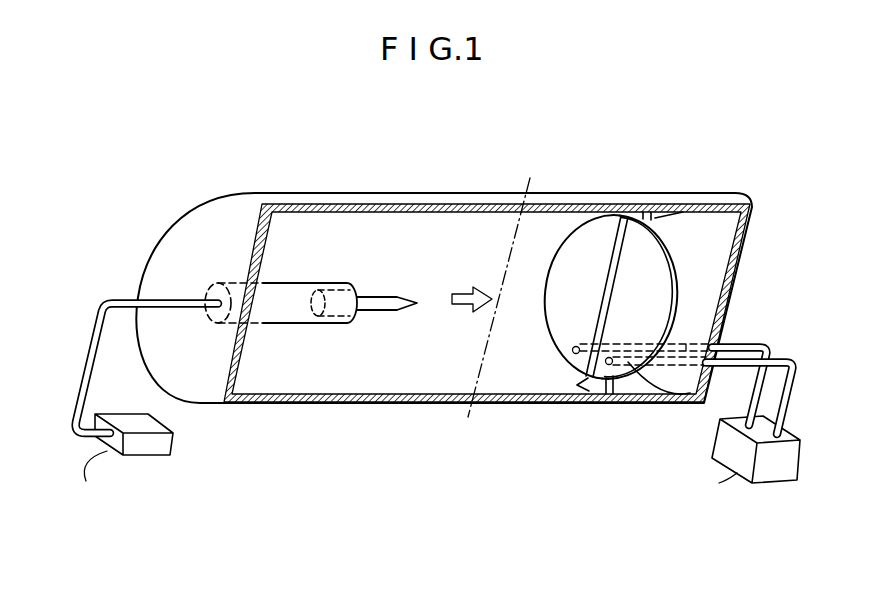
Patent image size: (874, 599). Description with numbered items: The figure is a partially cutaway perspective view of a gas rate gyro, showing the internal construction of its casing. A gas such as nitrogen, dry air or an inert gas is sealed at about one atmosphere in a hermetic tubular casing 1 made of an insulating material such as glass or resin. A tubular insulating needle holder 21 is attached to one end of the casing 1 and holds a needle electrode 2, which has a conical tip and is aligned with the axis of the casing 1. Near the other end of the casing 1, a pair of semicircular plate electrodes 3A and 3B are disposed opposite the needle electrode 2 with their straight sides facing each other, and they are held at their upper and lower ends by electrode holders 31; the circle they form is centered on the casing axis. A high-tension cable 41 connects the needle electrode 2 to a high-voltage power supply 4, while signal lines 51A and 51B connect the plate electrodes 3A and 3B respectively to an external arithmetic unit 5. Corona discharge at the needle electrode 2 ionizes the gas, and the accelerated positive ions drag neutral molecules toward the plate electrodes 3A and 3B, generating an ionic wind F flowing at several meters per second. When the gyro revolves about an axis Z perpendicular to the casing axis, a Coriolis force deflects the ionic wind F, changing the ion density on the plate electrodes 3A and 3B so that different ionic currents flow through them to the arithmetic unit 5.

The hermetic tubular casing 1 is at (366, 203).
The needle electrode 2 is at (386, 297).
The tubular insulating needle holder 21 is at (292, 290).
The plate electrode 3A is at (553, 290).
The plate electrode 3B is at (657, 311).
The electrode holders 31 is at (634, 211).
The high-voltage power supply 4 is at (165, 445).
The high-tension cable 41 is at (122, 303).
The arithmetic unit 5 is at (722, 444).
The signal line 51A is at (737, 343).
The signal line 51B is at (793, 372).
The axis Z is at (528, 187).
The ionic wind F is at (461, 305).